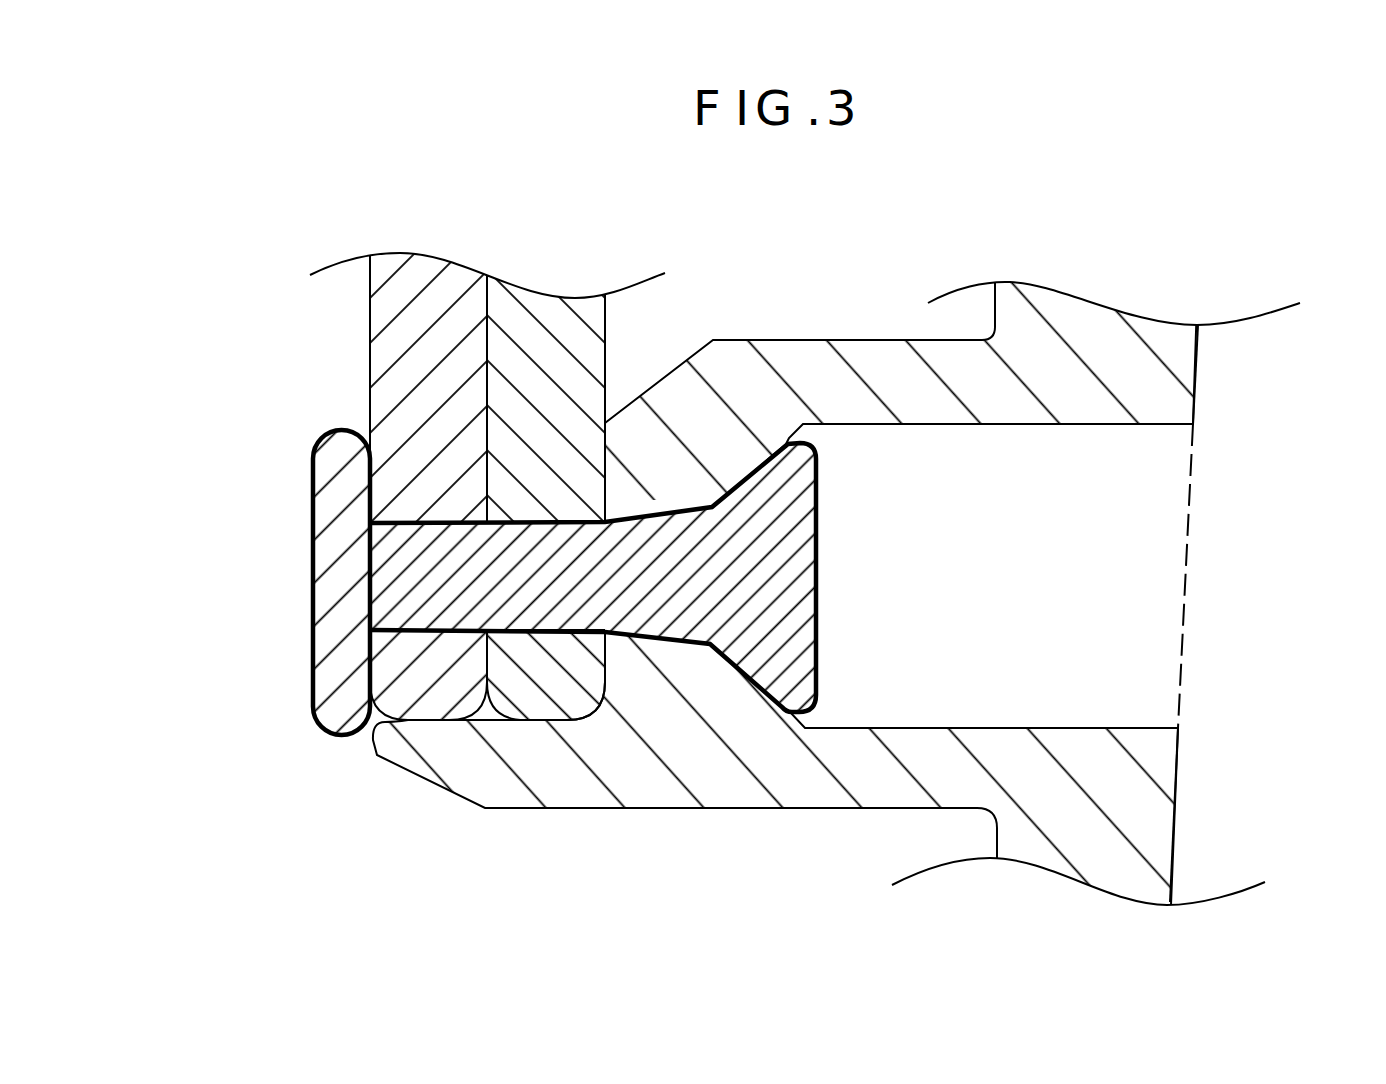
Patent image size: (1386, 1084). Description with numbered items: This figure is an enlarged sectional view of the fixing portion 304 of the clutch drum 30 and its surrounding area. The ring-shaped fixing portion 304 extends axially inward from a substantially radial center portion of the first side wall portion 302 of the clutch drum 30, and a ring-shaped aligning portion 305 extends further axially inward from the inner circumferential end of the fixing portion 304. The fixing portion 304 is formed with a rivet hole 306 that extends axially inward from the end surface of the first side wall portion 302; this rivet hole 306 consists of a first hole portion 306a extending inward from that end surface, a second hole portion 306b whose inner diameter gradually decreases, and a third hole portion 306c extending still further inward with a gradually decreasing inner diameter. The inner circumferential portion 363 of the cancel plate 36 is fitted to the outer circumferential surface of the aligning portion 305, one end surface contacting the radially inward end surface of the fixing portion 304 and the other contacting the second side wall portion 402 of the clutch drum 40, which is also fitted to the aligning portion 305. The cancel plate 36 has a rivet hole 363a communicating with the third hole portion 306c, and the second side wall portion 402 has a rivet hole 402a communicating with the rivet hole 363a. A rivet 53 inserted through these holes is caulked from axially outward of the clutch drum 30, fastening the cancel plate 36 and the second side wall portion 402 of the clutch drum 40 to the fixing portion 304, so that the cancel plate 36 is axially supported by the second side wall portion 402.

The clutch drum 30 is at (839, 599).
The first side wall portion 302 is at (1130, 807).
The fixing portion 304 is at (863, 383).
The aligning portion 305 is at (492, 780).
The rivet hole 306 is at (715, 568).
The first hole portion 306a is at (860, 425).
The second hole portion 306b is at (748, 477).
The third hole portion 306c is at (693, 637).
The cancel plate 36 is at (472, 482).
The inner circumferential portion 363 is at (451, 482).
The rivet hole 363a is at (550, 629).
The clutch drum 40 is at (360, 482).
The second side wall portion 402 is at (360, 482).
The rivet hole 402a is at (440, 519).
The rivet 53 is at (292, 675).